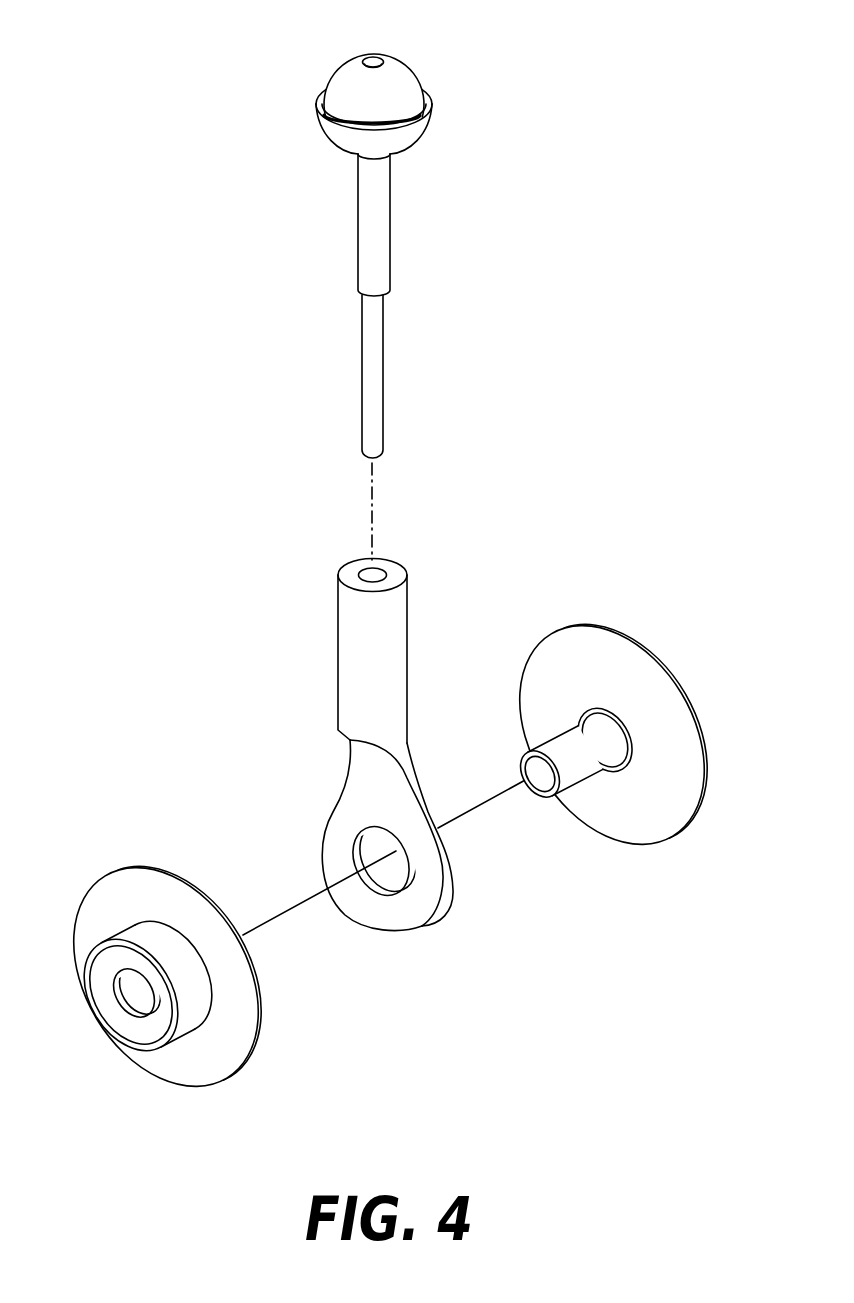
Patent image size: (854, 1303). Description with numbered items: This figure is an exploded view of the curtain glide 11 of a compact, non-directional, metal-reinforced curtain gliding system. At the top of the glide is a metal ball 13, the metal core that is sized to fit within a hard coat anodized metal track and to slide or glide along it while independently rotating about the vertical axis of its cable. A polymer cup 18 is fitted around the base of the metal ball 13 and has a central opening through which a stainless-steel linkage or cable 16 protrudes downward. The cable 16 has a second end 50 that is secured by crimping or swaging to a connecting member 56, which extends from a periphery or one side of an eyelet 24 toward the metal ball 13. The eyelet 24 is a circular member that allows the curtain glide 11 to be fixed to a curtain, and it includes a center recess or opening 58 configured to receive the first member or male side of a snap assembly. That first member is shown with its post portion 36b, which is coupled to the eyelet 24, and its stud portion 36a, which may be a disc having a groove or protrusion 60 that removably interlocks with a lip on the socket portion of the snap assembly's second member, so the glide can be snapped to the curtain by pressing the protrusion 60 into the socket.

The curtain glide 11 is at (664, 171).
The metal ball 13 is at (394, 79).
The cable 16 is at (444, 261).
The polymer cup 18 is at (421, 129).
The second end 50 is at (375, 412).
The connecting member 56 is at (378, 655).
The eyelet 24 is at (419, 865).
The center opening 58 is at (383, 882).
The stud portion 36a is at (196, 990).
The post portion 36b is at (663, 841).
The protrusion 60 is at (182, 1025).